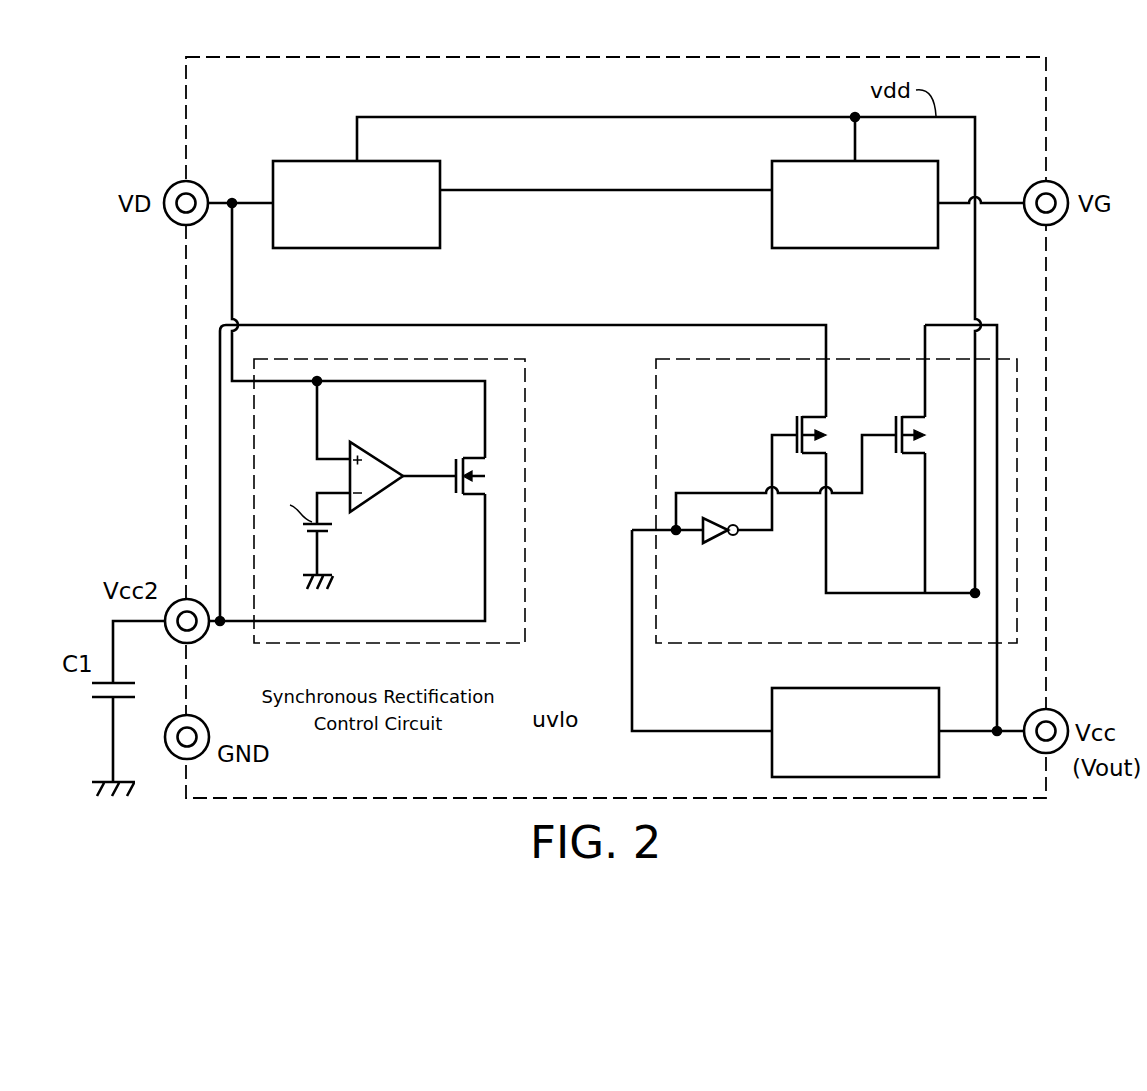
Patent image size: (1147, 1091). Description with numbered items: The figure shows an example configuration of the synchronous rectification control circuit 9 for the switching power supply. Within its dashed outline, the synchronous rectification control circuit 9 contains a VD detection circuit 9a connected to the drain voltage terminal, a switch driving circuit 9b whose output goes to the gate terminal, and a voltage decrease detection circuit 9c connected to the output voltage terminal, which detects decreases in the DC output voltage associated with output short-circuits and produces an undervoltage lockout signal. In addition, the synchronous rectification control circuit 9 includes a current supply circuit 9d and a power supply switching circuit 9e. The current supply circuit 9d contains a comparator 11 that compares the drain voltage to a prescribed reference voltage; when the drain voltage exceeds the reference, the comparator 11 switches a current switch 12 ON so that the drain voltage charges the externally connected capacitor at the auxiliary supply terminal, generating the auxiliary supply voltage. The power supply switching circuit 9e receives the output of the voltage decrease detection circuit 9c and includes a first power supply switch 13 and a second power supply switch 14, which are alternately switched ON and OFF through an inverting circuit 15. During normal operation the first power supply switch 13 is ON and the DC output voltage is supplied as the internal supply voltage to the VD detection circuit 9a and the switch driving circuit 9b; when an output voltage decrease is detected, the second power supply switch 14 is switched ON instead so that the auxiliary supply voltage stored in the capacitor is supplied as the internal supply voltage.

The synchronous rectification control circuit 9 is at (661, 82).
The VD detection circuit 9a is at (422, 175).
The switch driving circuit 9b is at (775, 175).
The voltage decrease detection circuit 9c is at (772, 713).
The current supply circuit 9d is at (389, 501).
The power supply switching circuit 9e is at (808, 501).
The comparator 11 is at (382, 456).
The current switch 12 is at (457, 458).
The first power supply switch 13 is at (906, 418).
The second power supply switch 14 is at (796, 420).
The inverting circuit 15 is at (718, 518).